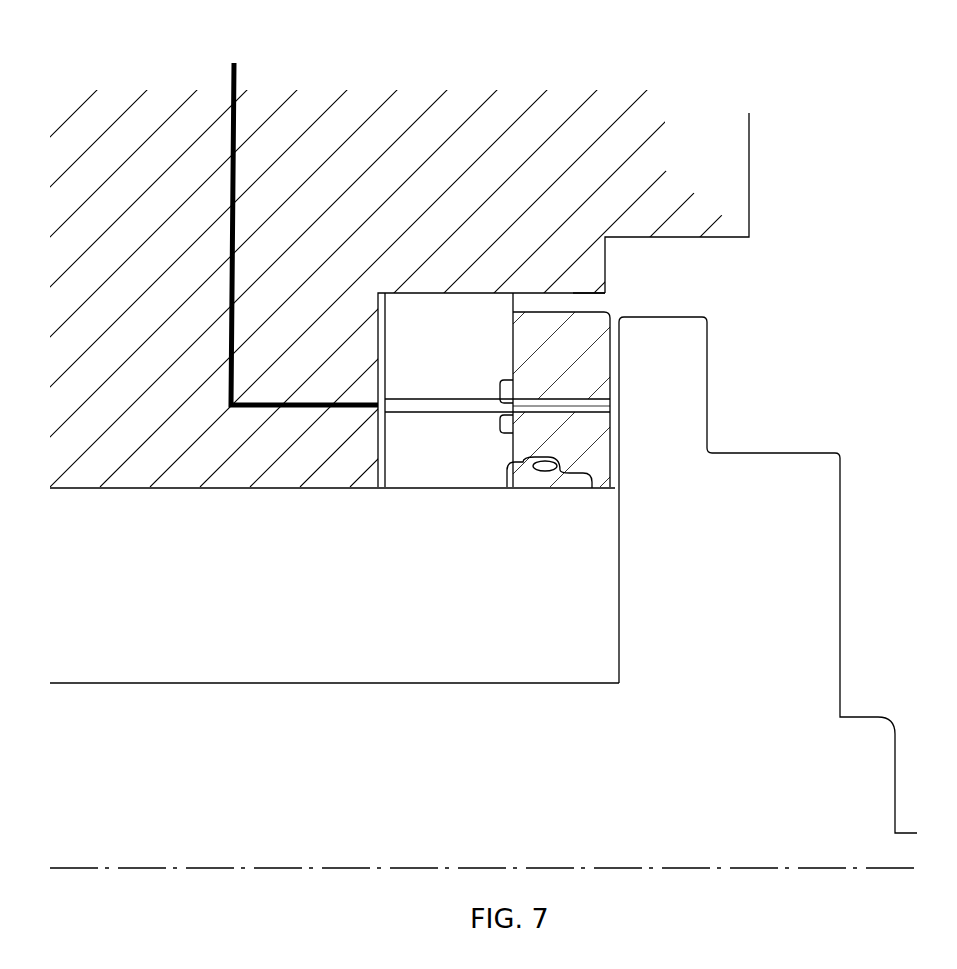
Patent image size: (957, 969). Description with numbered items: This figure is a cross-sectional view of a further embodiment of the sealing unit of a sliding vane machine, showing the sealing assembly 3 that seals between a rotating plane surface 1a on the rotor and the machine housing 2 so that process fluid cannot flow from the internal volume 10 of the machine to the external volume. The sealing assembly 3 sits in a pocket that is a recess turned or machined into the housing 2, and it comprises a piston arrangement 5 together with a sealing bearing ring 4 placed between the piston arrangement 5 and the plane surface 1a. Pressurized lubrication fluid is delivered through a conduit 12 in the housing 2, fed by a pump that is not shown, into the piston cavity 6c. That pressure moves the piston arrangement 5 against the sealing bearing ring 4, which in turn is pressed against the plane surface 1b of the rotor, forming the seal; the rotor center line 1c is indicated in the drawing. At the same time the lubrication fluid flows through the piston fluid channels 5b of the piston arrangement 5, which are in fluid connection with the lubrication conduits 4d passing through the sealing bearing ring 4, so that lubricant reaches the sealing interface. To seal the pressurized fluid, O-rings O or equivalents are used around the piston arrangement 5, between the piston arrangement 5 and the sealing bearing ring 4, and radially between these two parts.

The rotating plane surface 1a is at (620, 533).
The plane surface 1b is at (292, 683).
The frame center line 1c is at (427, 867).
The machine housing 2 is at (677, 190).
The sealing assembly 3 is at (613, 300).
The sealing bearing ring 4 is at (572, 346).
The lubrication conduits 4d is at (588, 408).
The piston arrangement 5 is at (477, 323).
The piston fluid channels 5b is at (467, 408).
The piston cavity 6c is at (572, 298).
The internal volume 10 is at (332, 552).
The fluid supply line 12 is at (292, 214).
The O-rings O is at (503, 432).